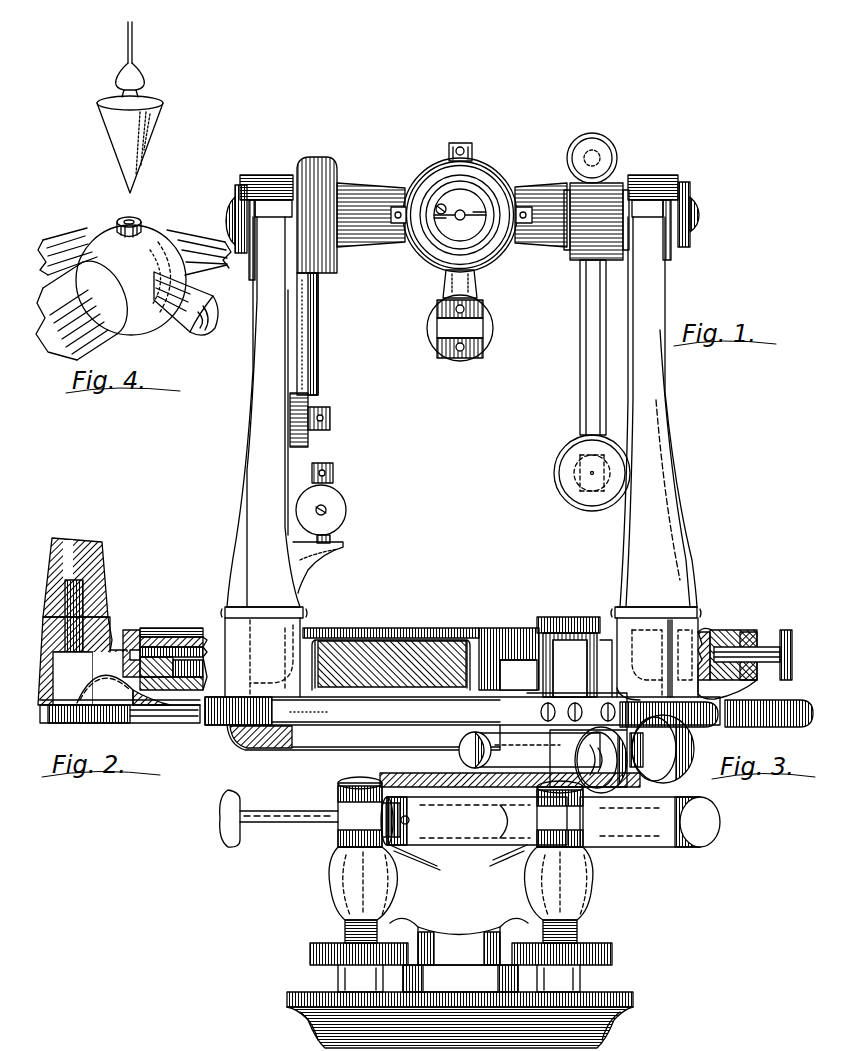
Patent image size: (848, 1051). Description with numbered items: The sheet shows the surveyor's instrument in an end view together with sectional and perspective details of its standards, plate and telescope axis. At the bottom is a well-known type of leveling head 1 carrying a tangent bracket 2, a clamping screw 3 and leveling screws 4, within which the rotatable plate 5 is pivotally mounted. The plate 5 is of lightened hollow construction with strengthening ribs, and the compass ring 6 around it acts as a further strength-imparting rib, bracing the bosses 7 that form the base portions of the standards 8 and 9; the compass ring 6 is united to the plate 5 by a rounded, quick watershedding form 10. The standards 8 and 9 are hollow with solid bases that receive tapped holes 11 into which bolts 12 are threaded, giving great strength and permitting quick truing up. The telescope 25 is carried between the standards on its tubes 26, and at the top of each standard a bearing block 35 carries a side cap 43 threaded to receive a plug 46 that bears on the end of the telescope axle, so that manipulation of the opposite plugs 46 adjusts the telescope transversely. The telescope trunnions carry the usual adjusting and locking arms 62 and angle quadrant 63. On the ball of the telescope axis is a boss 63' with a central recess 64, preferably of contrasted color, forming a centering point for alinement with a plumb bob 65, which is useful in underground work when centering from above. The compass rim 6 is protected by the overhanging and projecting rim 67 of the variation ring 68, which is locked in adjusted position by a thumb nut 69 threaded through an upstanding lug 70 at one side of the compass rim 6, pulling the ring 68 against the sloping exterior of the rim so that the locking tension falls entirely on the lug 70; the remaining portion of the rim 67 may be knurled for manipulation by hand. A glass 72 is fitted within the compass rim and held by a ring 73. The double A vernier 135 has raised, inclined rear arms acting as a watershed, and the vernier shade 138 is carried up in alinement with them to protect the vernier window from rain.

In FIG. 1, the leveling head 1 is at (439, 873).
In FIG. 1, the tangent bracket 2 is at (400, 822).
In FIG. 1, the clamping screw 3 is at (280, 818).
In FIG. 1, the leveling screws 4 is at (326, 935).
In FIG. 1, the rotatable plate 5 is at (262, 740).
In FIG. 3, the rotatable plate 5 is at (753, 713).
In FIG. 2, the rotatable plate 5 is at (190, 722).
In FIG. 1, the compass ring 6 is at (500, 630).
In FIG. 3, the compass ring 6 is at (716, 634).
In FIG. 2, the compass ring 6 is at (121, 647).
In FIG. 1, the bosses 7 is at (290, 626).
In FIG. 3, the bosses 7 is at (682, 628).
In FIG. 2, the bosses 7 is at (108, 618).
In FIG. 1, the standard 8 is at (662, 400).
In FIG. 1, the standard 9 is at (266, 418).
In FIG. 2, the standard 9 is at (102, 542).
In FIG. 1, the rounded strengthening form 10 is at (280, 682).
In FIG. 2, the tapped holes 11 is at (68, 560).
In FIG. 2, the bolts 12 is at (77, 718).
In FIG. 1, the telescope 25 is at (492, 168).
In FIG. 4, the telescope 25 is at (148, 228).
In FIG. 1, the telescope tubes 26 is at (362, 187).
In FIG. 4, the telescope tubes 26 is at (55, 233).
In FIG. 1, the bearing block 35 is at (270, 178).
In FIG. 1, the side cap 43 is at (241, 186).
In FIG. 1, the threaded plug 46 is at (228, 208).
In FIG. 1, the adjusting and locking arms 62 is at (585, 378).
In FIG. 1, the angle quadrant 63 is at (327, 302).
In FIG. 1, the boss 63' is at (475, 131).
In FIG. 4, the boss 63' is at (142, 215).
In FIG. 1, the central recess 64 is at (668, 622).
In FIG. 4, the central recess 64 is at (120, 221).
In FIG. 4, the plumb bob 65 is at (152, 132).
In FIG. 1, the projecting rim 67 is at (380, 630).
In FIG. 3, the projecting rim 67 is at (736, 632).
In FIG. 2, the projecting rim 67 is at (145, 632).
In FIG. 2, the variation ring 68 is at (155, 692).
In FIG. 3, the thumb nut 69 is at (786, 630).
In FIG. 3, the upstanding lug 70 is at (748, 633).
In FIG. 1, the glass 72 is at (605, 626).
In FIG. 2, the glass 72 is at (182, 652).
In FIG. 2, the ring 73 is at (160, 640).
In FIG. 1, the A vernier 135 is at (418, 700).
In FIG. 1, the vernier shade 138 is at (420, 650).